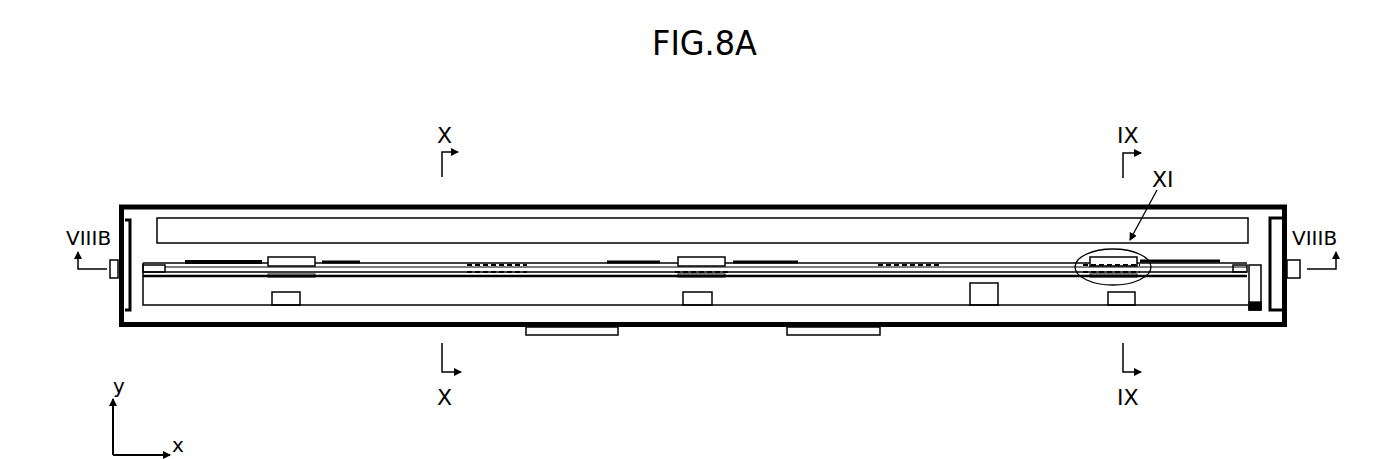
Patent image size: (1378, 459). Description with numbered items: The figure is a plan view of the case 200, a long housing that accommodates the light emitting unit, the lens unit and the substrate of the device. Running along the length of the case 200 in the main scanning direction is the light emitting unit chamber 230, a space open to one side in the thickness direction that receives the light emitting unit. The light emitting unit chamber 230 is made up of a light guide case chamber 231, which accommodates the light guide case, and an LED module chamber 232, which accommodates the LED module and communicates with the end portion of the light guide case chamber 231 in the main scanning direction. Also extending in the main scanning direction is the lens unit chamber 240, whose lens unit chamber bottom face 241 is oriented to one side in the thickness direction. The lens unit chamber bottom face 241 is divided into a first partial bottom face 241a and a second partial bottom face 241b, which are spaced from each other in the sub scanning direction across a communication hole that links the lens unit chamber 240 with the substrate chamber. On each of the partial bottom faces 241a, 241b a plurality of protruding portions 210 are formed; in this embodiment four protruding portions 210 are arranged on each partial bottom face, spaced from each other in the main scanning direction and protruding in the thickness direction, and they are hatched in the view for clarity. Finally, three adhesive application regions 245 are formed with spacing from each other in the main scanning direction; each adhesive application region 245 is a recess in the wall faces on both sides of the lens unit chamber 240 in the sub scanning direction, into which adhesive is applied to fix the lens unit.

The case 200 is at (186, 128).
The protruding portions 210 is at (512, 265).
The light emitting unit chamber 230 is at (706, 345).
The light guide case chamber 231 is at (1173, 295).
The LED module chamber 232 is at (1258, 295).
The lens unit chamber 240 is at (242, 262).
The lens unit chamber bottom face 241 is at (695, 184).
The first partial bottom face 241a is at (337, 263).
The second partial bottom face 241b is at (396, 268).
The adhesive application region 245 is at (289, 258).